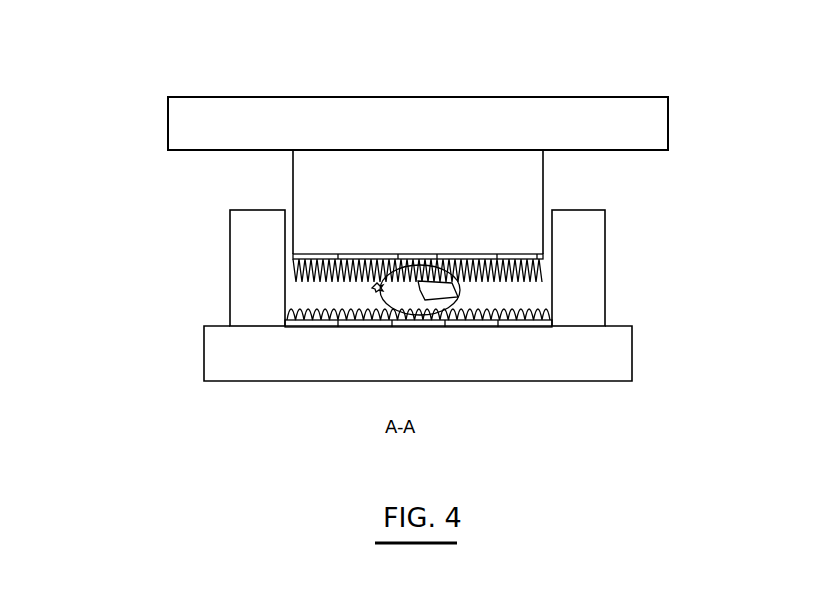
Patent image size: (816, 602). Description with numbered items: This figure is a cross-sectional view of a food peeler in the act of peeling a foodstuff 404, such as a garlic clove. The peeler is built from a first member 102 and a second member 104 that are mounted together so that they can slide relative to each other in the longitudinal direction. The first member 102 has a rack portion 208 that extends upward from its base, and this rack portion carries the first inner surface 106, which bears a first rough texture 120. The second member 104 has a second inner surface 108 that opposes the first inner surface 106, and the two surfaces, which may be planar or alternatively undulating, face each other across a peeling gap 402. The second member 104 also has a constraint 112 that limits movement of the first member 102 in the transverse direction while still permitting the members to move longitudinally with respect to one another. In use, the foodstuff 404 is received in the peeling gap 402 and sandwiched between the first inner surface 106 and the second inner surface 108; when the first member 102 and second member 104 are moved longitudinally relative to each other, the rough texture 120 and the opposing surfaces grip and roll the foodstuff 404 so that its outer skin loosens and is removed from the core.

The first member 102 is at (370, 72).
The second member 104 is at (655, 312).
The first inner surface 106 is at (300, 283).
The second inner surface 108 is at (283, 325).
The constraint 112 is at (236, 218).
The first rough texture 120 is at (363, 275).
The rack portion 208 is at (307, 227).
The peeling gap 402 is at (537, 295).
The foodstuff 404 is at (407, 287).